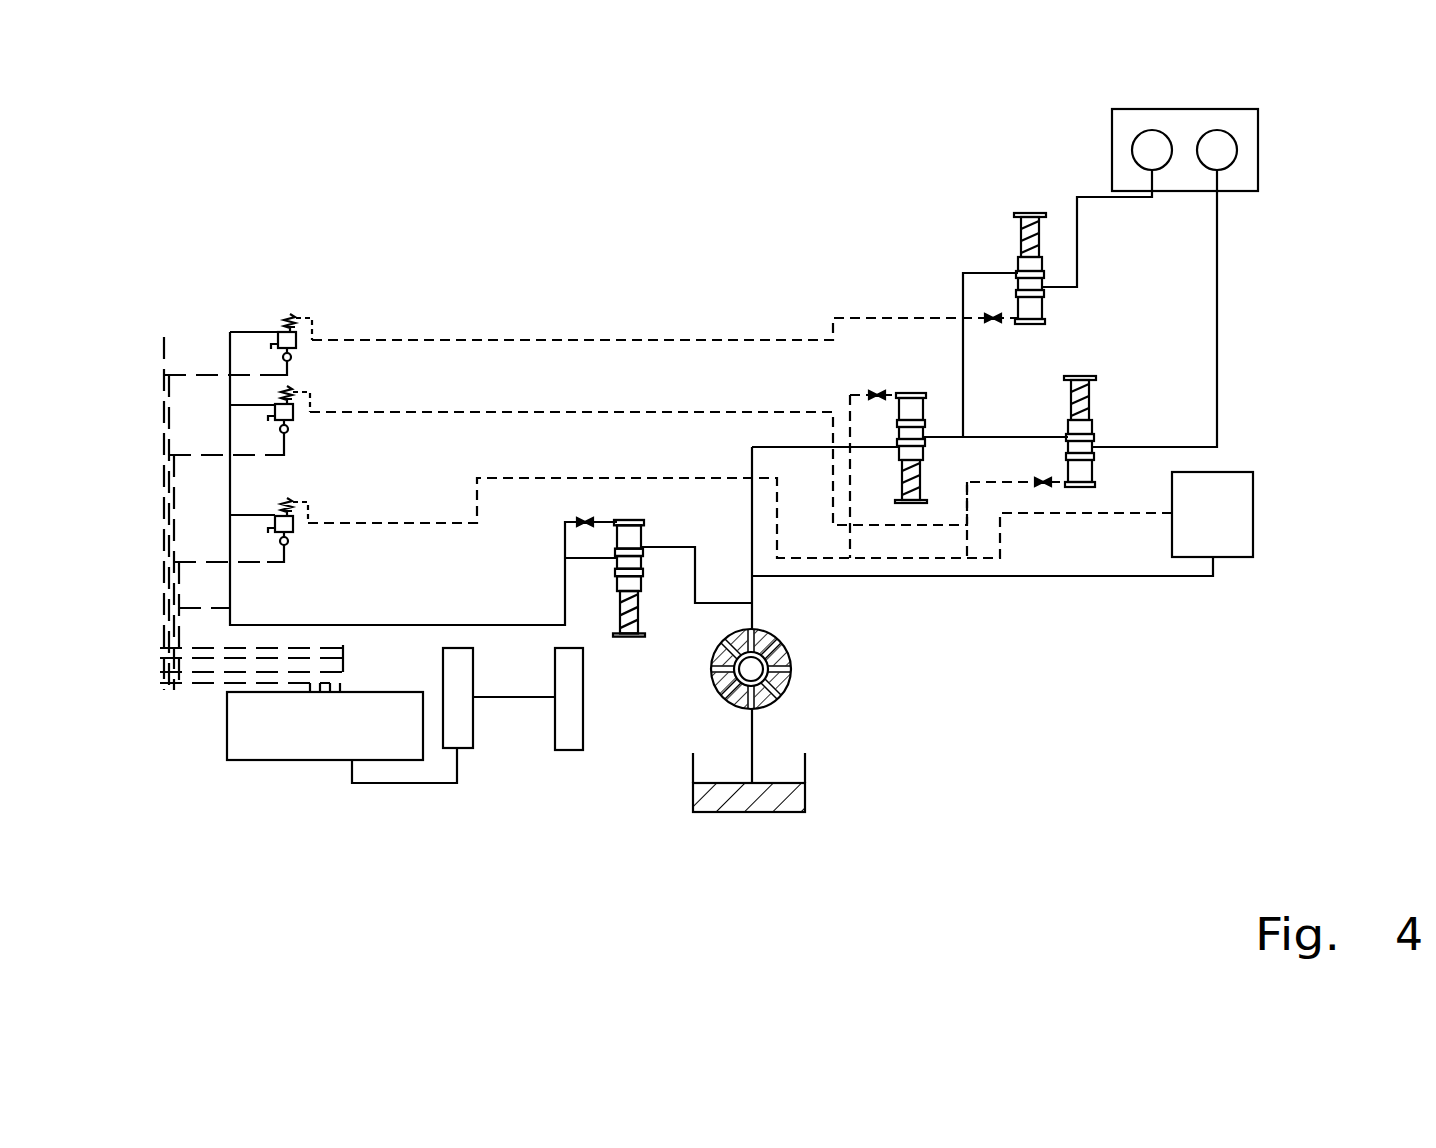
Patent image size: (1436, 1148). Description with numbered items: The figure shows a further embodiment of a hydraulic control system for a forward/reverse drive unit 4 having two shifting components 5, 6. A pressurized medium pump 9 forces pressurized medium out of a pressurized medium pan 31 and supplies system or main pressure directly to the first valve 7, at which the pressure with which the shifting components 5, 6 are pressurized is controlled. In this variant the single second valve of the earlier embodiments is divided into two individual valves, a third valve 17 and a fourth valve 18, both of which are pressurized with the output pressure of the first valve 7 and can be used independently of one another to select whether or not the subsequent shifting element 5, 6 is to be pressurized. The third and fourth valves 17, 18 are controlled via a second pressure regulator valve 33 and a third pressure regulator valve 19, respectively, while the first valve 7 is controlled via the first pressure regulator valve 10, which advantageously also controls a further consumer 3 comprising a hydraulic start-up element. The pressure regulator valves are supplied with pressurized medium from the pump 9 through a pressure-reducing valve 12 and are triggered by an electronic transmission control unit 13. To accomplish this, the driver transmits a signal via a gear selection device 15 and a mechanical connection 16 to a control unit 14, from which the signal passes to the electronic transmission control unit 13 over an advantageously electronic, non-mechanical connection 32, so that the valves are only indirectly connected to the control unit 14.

The further consumer 3 is at (1237, 502).
The forward/reverse drive unit 4 is at (1247, 127).
The shifting component 5 is at (1153, 155).
The shifting component 6 is at (1218, 155).
The first valve 7 is at (920, 490).
The pressurized medium pump 9 is at (787, 688).
The first pressure regulator valve 10 is at (290, 515).
The pressure-reducing valve 12 is at (632, 637).
The electronic transmission control unit 13 is at (262, 742).
The control unit 14 is at (463, 728).
The gear selection device 15 is at (572, 687).
The mechanical connection 16 is at (520, 697).
The third valve 17 is at (1080, 413).
The fourth valve 18 is at (1026, 213).
The third pressure regulator valve 19 is at (292, 330).
The pressurized medium pan 31 is at (758, 803).
The non-mechanical connection 32 is at (373, 785).
The second pressure regulator valve 33 is at (297, 412).